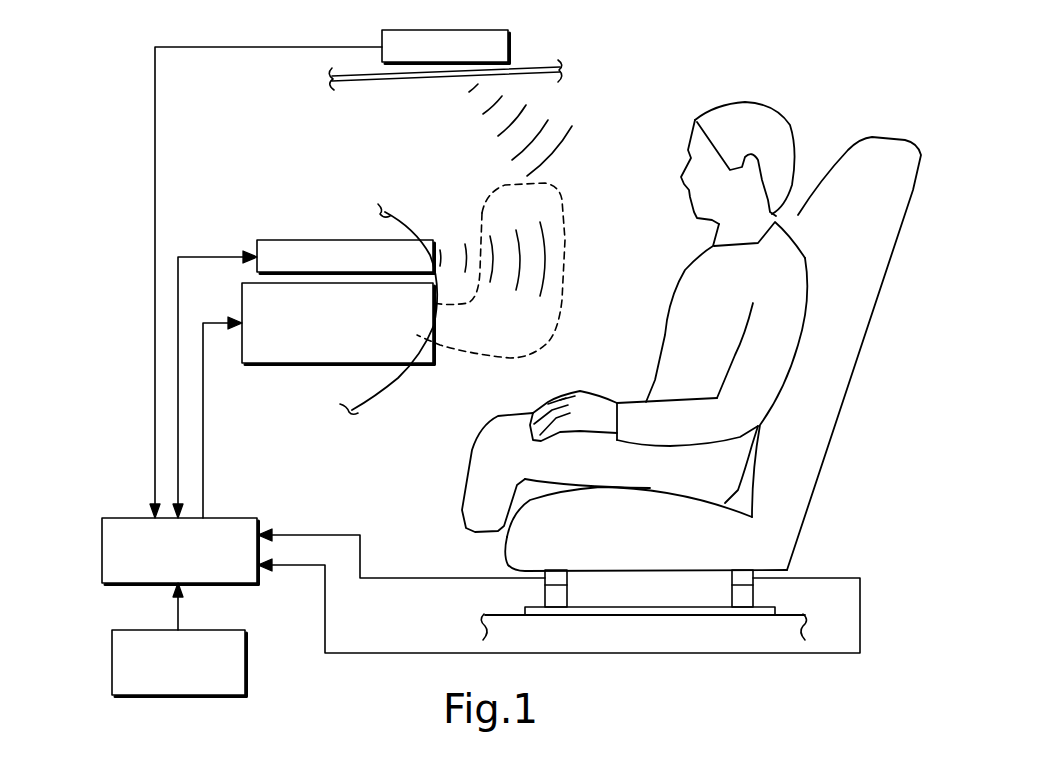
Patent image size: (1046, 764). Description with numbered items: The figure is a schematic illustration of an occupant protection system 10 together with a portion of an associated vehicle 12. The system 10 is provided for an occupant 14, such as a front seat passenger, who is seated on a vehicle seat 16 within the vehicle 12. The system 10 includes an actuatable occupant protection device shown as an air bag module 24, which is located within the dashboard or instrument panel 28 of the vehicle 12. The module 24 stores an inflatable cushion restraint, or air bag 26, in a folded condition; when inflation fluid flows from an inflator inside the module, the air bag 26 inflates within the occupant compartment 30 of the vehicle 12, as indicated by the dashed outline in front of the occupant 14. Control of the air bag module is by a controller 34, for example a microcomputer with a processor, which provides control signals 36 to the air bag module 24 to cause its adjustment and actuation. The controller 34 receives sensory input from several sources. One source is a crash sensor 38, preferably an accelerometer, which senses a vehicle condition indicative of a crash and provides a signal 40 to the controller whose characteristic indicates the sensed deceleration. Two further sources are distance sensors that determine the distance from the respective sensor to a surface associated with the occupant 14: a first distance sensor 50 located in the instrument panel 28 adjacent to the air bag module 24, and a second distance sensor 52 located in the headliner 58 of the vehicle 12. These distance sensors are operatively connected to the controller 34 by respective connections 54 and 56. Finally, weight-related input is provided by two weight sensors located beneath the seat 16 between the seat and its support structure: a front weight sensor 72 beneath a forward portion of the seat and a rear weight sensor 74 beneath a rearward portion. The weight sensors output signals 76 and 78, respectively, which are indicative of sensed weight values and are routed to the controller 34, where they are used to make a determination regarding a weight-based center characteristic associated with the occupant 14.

The occupant protection system 10 is at (136, 158).
The vehicle 12 is at (853, 445).
The occupant 14 is at (806, 262).
The vehicle seat 16 is at (850, 350).
The air bag module 24 is at (242, 289).
The air bag 26 is at (482, 213).
The instrument panel 28 is at (398, 233).
The occupant compartment 30 is at (645, 230).
The controller 34 is at (121, 529).
The control signal 36 is at (205, 434).
The crash sensor 38 is at (122, 634).
The crash sensor signal 40 is at (180, 620).
The first distance sensor 50 is at (275, 240).
The second distance sensor 52 is at (500, 32).
The connection of first distance sensor 54 is at (185, 256).
The connection of second distance sensor 56 is at (245, 46).
The headliner 58 is at (540, 70).
The front weight sensor 72 is at (558, 574).
The rear weight sensor 74 is at (742, 574).
The front weight sensor signal 76 is at (382, 572).
The rear weight sensor signal 78 is at (352, 652).